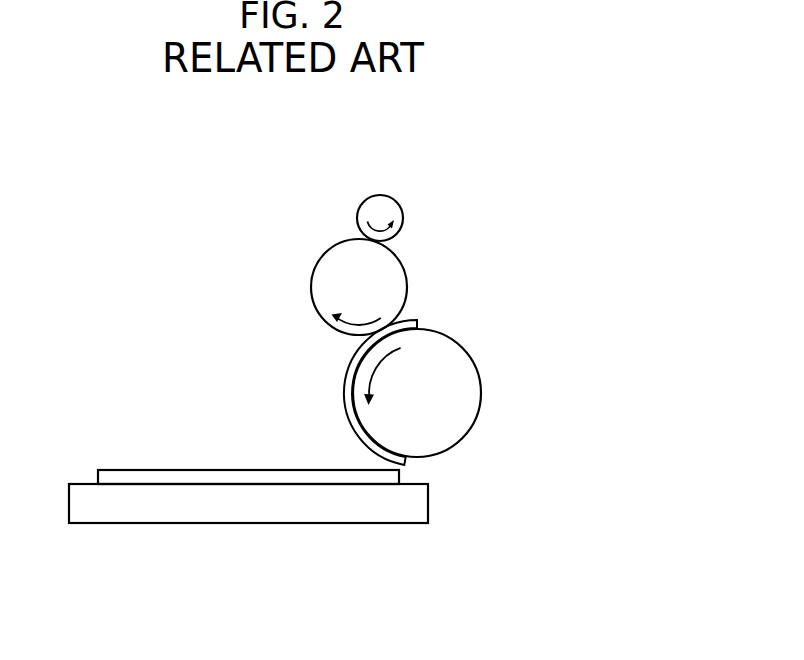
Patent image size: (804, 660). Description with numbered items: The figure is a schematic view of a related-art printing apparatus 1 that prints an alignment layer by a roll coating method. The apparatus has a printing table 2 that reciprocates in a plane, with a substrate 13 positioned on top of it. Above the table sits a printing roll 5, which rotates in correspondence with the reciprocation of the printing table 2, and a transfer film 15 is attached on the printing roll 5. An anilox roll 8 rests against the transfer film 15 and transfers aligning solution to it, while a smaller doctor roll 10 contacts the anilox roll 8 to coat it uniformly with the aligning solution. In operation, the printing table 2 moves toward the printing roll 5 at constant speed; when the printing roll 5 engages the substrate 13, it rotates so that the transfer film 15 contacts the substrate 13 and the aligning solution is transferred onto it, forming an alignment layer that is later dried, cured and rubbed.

The printing apparatus 1 is at (441, 199).
The doctor roll 10 is at (362, 209).
The anilox roll 8 is at (312, 283).
The printing roll 5 is at (468, 352).
The transfer film 15 is at (350, 407).
The substrate 13 is at (110, 469).
The printing table 2 is at (313, 523).